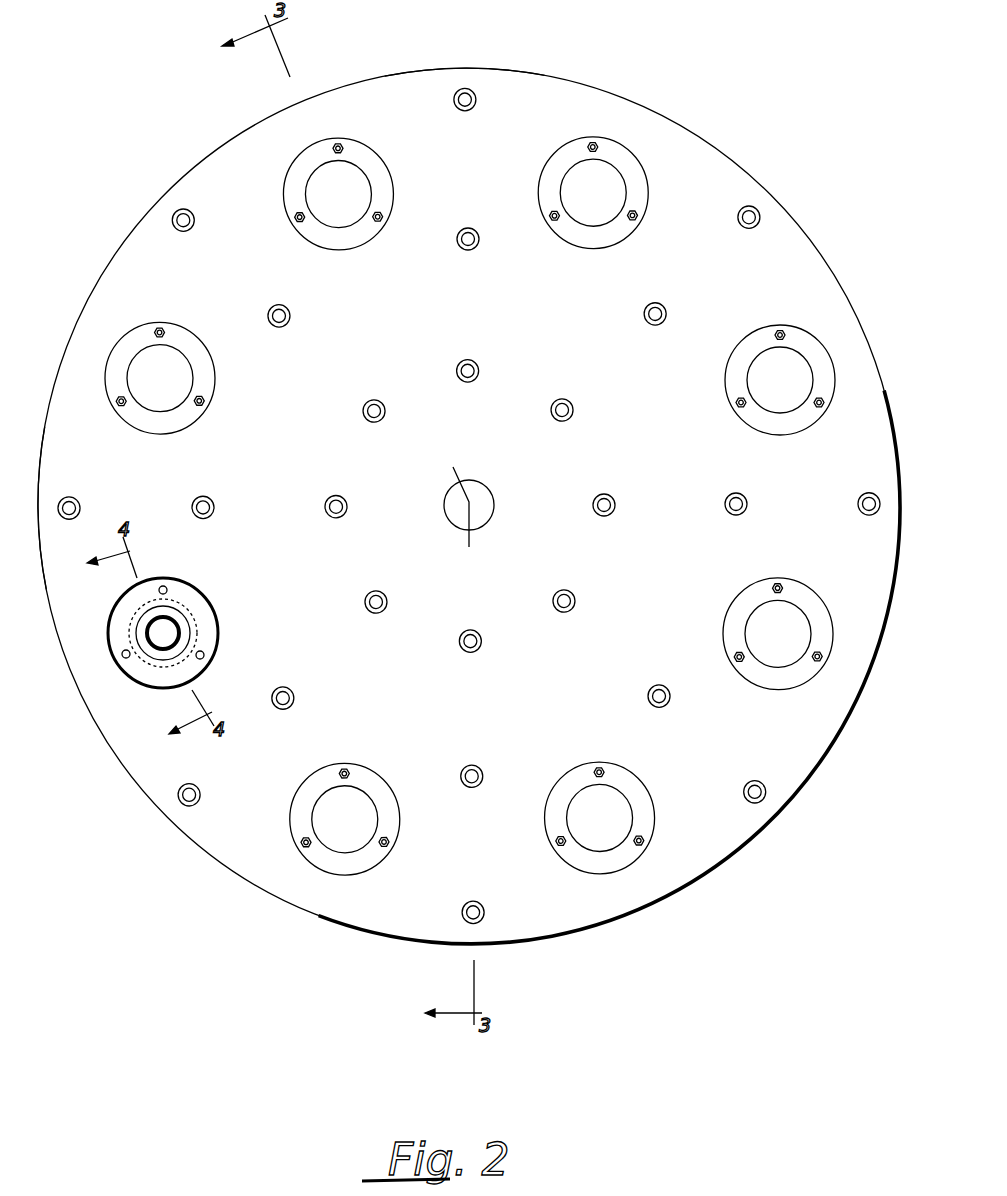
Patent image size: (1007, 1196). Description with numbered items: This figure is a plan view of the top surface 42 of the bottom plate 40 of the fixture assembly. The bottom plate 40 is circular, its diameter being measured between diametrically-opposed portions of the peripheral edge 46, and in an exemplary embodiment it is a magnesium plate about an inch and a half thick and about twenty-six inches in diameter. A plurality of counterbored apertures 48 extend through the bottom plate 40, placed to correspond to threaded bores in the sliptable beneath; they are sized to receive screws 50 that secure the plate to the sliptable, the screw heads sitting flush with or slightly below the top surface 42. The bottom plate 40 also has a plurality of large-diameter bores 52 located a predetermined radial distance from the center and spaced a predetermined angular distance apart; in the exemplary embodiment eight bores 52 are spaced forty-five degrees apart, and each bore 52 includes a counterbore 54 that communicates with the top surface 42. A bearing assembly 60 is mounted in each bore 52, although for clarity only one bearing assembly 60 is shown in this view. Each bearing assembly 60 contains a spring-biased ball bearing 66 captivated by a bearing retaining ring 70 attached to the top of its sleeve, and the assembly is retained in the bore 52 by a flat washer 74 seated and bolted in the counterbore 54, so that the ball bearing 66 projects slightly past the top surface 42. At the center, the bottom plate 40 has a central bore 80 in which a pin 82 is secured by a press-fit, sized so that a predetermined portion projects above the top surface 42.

The bottom plate 40 is at (631, 86).
The top surface 42 is at (441, 316).
The peripheral edge 46 is at (433, 68).
The counterbored apertures 48 is at (733, 503).
The screws 50 is at (469, 241).
The large-diameter bores 52 is at (784, 349).
The counterbore 54 is at (728, 371).
The bearing assembly 60 is at (181, 603).
The ball bearing 66 is at (172, 627).
The bearing retaining ring 70 is at (188, 635).
The flat washer 74 is at (193, 665).
The central bore 80 is at (486, 513).
The pin 82 is at (479, 492).